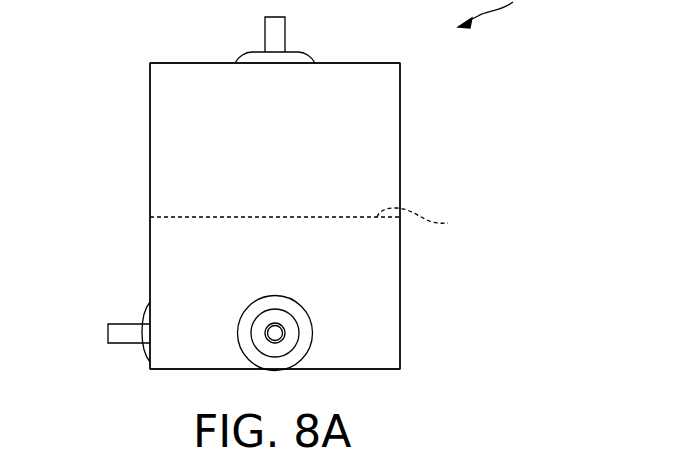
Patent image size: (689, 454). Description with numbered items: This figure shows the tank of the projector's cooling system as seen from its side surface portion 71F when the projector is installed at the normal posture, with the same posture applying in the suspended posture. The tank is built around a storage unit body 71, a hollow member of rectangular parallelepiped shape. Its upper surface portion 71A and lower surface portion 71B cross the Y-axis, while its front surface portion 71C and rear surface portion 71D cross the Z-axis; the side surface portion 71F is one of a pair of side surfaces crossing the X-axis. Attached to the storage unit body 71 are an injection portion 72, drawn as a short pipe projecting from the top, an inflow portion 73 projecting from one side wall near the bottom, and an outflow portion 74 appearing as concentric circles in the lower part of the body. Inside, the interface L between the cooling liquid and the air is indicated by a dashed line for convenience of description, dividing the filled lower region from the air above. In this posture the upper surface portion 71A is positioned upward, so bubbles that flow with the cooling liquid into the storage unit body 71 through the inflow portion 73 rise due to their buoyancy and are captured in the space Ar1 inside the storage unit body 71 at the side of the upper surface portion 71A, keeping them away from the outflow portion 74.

The storage unit body 71 is at (386, 326).
The upper surface portion 71A is at (388, 62).
The lower surface portion 71B is at (381, 373).
The front surface portion 71C is at (400, 123).
The rear surface portion 71D is at (150, 150).
The side surface portion 71F is at (386, 277).
The injection portion 72 is at (285, 23).
The inflow portion 73 is at (123, 331).
The outflow portion 74 is at (278, 323).
The interface L is at (417, 210).
The space Ar1 is at (378, 152).